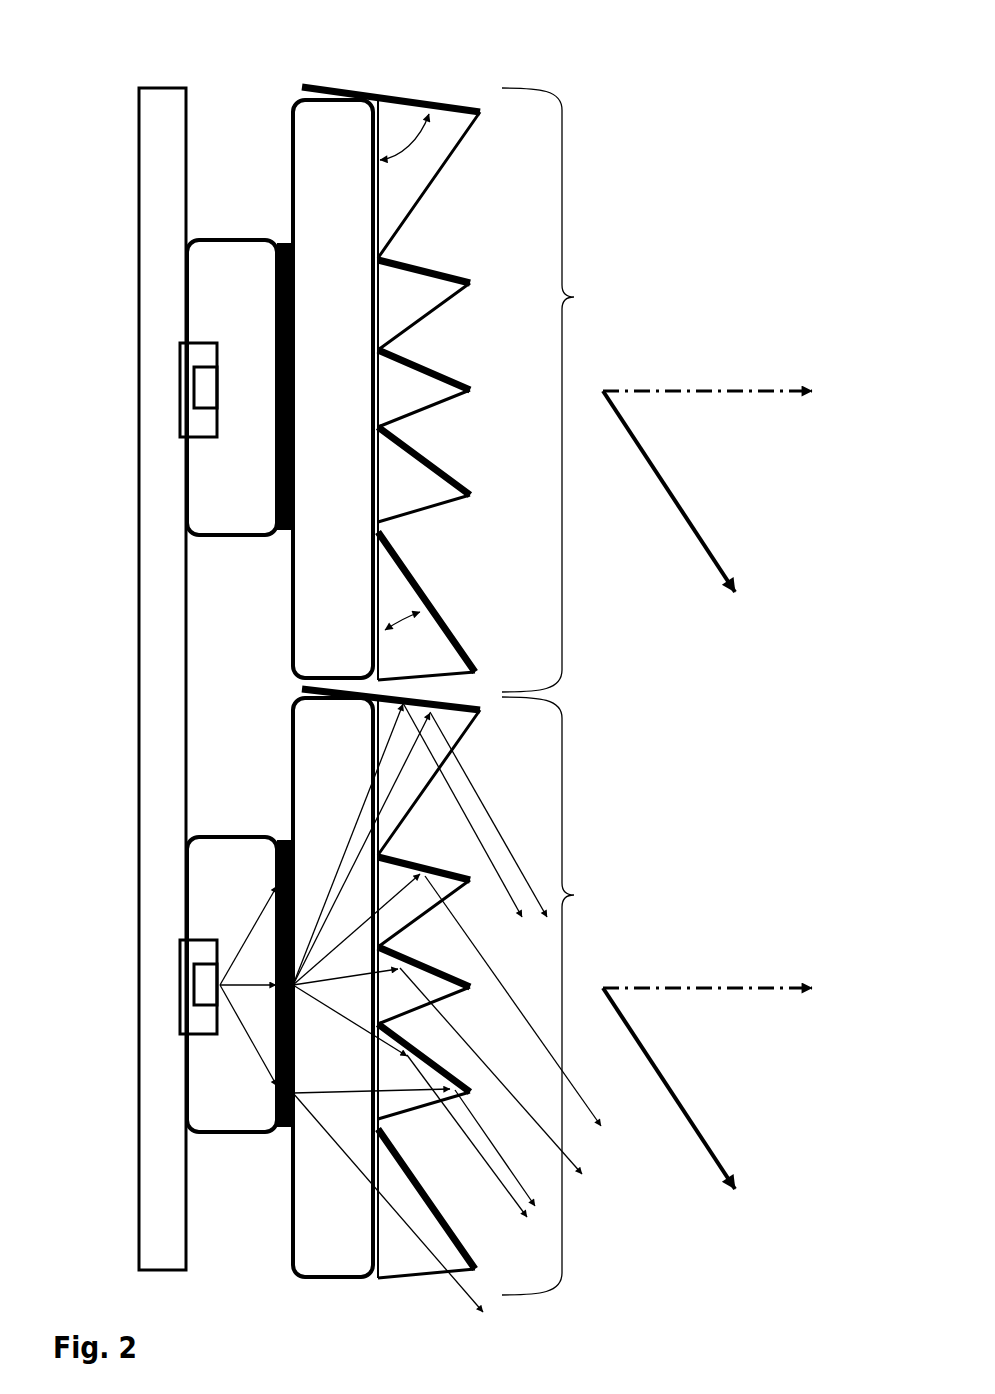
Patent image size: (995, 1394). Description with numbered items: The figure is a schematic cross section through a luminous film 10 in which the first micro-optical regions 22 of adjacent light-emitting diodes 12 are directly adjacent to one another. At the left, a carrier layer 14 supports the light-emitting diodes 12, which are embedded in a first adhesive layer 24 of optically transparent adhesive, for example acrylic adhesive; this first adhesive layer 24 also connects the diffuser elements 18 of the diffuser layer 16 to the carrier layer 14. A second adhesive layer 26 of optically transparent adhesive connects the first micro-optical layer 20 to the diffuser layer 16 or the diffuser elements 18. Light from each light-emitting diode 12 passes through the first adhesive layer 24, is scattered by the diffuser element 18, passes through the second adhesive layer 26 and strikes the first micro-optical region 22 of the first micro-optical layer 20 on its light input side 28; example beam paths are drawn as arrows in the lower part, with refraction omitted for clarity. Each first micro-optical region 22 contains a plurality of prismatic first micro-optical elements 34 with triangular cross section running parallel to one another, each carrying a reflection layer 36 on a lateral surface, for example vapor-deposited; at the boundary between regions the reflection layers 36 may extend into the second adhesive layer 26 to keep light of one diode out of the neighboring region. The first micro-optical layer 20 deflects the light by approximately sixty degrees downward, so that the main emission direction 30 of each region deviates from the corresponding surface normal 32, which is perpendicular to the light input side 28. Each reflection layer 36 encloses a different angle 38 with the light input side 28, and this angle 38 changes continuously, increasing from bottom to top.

The luminous film 10 is at (688, 124).
The light-emitting diode 12 is at (192, 390).
The carrier layer 14 is at (158, 655).
The diffuser layer 16 is at (249, 133).
The diffuser element 18 is at (286, 240).
The first micro-optical layer 20 is at (419, 646).
The first micro-optical region 22 is at (576, 298).
The first adhesive layer 24 is at (216, 250).
The second adhesive layer 26 is at (332, 158).
The light input side 28 is at (374, 559).
The main emission direction 30 is at (696, 525).
The surface normal 32 is at (748, 389).
The first micro-optical element 34 is at (413, 172).
The reflection layer 36 is at (458, 99).
The angle 38 is at (410, 150).